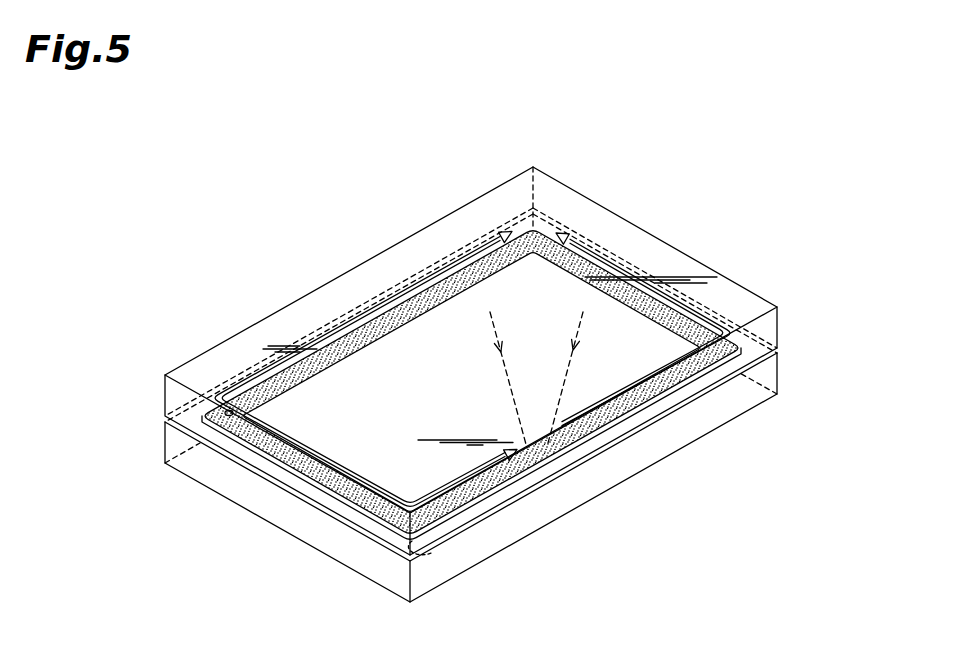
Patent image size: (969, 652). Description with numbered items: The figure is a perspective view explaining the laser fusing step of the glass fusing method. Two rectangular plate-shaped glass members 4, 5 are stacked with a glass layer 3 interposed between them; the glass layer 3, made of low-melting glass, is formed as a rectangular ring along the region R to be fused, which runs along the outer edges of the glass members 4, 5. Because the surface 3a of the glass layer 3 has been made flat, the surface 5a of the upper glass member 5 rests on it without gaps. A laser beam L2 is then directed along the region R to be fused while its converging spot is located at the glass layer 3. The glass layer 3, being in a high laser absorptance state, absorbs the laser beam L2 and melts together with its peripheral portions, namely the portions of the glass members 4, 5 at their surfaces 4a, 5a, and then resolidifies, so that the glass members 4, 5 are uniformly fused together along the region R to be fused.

The glass layer 3 is at (312, 468).
The surface of glass layer 3a is at (262, 360).
The glass member 4 is at (778, 375).
The surface of glass member 4a is at (430, 541).
The glass member 5 is at (778, 323).
The surface of glass member 5a is at (392, 527).
The region to be fused R is at (628, 428).
The laser beam L2 is at (591, 306).